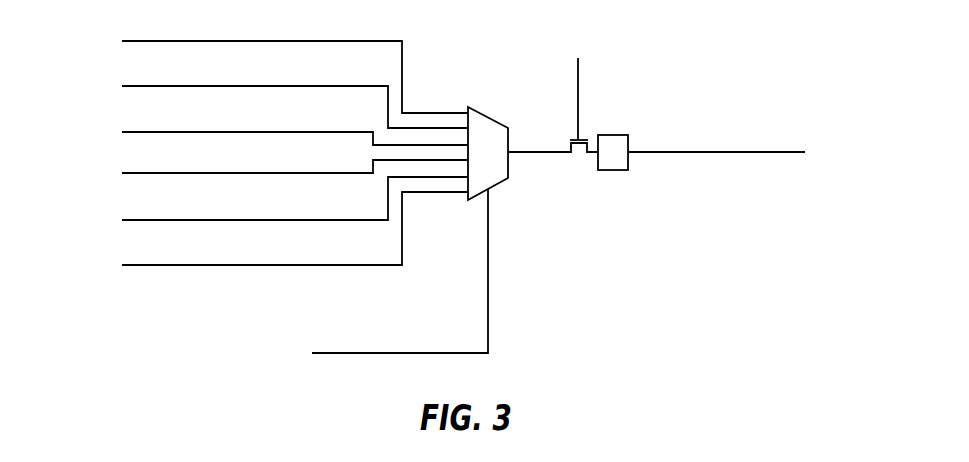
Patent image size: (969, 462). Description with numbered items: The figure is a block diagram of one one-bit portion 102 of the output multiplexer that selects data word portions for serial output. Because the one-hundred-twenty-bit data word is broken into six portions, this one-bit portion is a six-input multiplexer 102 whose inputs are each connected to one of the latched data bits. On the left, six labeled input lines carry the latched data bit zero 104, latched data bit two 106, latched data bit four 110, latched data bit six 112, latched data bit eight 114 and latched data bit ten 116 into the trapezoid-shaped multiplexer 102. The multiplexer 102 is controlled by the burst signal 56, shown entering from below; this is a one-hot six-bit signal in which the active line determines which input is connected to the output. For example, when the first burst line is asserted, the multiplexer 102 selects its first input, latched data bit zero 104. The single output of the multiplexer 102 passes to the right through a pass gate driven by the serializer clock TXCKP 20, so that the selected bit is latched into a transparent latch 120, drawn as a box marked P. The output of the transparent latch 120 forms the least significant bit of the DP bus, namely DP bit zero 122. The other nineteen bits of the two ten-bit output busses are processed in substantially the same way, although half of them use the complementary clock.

The Data_Latched[0] 104 is at (130, 40).
The Data_Latched[2] 106 is at (130, 85).
The Data_Latched[4] 110 is at (130, 131).
The Data_Latched[6] 112 is at (130, 172).
The Data_Latched[8] 114 is at (130, 219).
The Data_Latched[10] 116 is at (130, 264).
The one-bit portion of the output multiplexer 102 is at (488, 116).
The burst signal 56 is at (488, 283).
The serializer clock TXCKP 20 is at (578, 120).
The transparent latch 120 is at (612, 133).
The DP[0] 122 is at (735, 153).